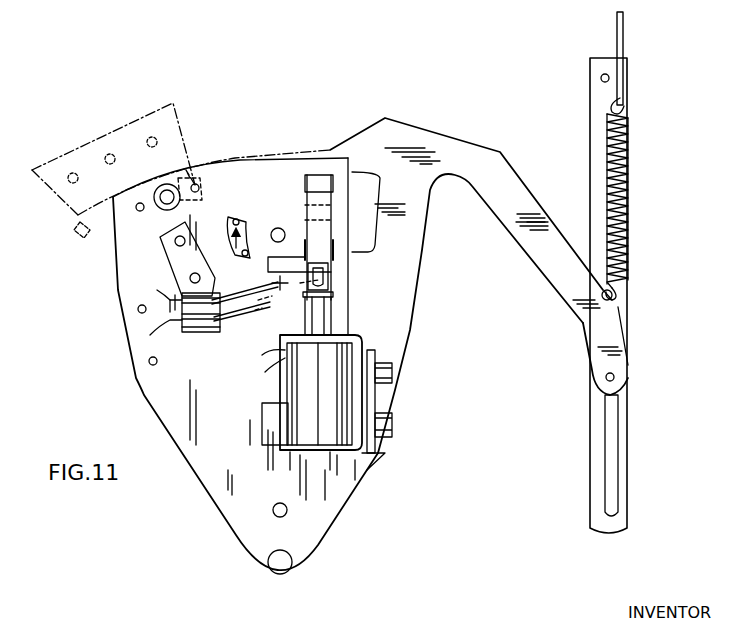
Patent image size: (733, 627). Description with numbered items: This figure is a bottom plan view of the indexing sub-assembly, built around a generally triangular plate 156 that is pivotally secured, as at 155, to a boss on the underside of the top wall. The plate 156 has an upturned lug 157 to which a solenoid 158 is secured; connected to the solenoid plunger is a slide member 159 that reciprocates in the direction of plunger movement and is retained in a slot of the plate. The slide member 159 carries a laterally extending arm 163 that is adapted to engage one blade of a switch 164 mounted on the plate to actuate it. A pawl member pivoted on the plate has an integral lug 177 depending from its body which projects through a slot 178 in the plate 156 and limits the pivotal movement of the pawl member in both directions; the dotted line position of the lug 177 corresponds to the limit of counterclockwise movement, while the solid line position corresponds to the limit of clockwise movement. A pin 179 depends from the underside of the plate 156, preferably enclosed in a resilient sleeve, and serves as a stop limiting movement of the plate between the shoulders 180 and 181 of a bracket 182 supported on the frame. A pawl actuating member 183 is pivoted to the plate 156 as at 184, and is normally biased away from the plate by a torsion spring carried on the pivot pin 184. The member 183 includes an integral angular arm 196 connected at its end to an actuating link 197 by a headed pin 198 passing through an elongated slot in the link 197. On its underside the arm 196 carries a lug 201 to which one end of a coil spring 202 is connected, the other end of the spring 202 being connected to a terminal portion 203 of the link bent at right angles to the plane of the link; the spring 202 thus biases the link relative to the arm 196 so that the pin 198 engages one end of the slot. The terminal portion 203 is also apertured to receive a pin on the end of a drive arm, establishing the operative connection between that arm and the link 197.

The pivot point 155 is at (286, 562).
The triangular plate 156 is at (233, 437).
The upturned lug 157 is at (378, 447).
The solenoid 158 is at (322, 410).
The slide member 159 is at (318, 195).
The laterally extending arm 163 is at (275, 257).
The switch 164 is at (205, 328).
The lug 177 is at (247, 260).
The slot 178 is at (208, 262).
The pin 179 is at (170, 192).
The shoulder 180 is at (233, 162).
The shoulder 181 is at (80, 236).
The bracket 182 is at (115, 127).
The pawl actuating member 183 is at (410, 133).
The pivot pin 184 is at (288, 511).
The angular arm 196 is at (542, 262).
The actuating link 197 is at (590, 83).
The headed pin 198 is at (614, 377).
The lug 201 is at (620, 307).
The coil spring 202 is at (623, 220).
The terminal portion 203 is at (624, 67).